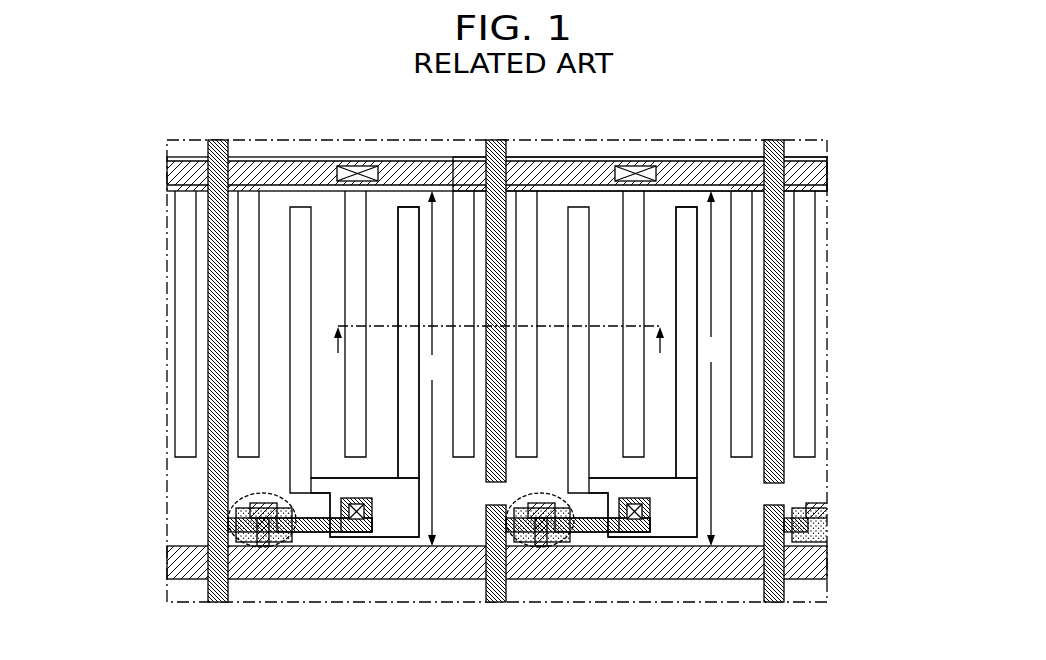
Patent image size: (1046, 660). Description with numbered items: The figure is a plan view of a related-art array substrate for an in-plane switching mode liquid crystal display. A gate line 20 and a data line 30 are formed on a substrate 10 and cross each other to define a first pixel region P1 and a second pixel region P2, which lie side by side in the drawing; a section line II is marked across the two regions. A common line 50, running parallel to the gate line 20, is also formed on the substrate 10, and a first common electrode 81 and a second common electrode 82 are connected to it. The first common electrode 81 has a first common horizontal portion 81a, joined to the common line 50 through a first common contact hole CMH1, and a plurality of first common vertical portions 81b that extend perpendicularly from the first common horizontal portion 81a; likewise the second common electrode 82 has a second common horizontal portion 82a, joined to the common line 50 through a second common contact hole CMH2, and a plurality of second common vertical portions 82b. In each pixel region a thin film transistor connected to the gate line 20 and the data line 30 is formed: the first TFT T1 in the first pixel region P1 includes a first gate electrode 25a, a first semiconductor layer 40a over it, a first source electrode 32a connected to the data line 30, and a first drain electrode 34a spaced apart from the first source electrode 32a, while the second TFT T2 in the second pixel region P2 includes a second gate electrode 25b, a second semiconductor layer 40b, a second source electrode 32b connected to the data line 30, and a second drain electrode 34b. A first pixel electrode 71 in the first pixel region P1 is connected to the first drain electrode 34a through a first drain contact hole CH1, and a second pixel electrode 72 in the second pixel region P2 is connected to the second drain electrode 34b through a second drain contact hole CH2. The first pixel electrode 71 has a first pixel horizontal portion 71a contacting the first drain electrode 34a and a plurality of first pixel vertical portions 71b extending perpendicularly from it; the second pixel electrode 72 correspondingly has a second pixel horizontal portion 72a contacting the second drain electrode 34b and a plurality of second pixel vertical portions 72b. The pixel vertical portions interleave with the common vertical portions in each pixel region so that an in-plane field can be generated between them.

The substrate 10 is at (828, 602).
The gate line 20 is at (385, 572).
The data line 30 is at (208, 380).
The common line 50 is at (507, 162).
The first gate electrode 25a is at (263, 506).
The second gate electrode 25b is at (541, 506).
The first source electrode 32a is at (238, 516).
The second source electrode 32b is at (516, 516).
The first drain electrode 34a is at (291, 521).
The second drain electrode 34b is at (569, 521).
The semiconductor layer 40a is at (278, 543).
The semiconductor layer 40b is at (556, 543).
The first thin film transistor T1 is at (251, 543).
The second thin film transistor T2 is at (529, 543).
The first drain contact hole CH1 is at (357, 506).
The second drain contact hole CH2 is at (635, 506).
The first common contact hole CMH1 is at (360, 164).
The second common contact hole CMH2 is at (641, 164).
The first pixel electrode 71 is at (475, 480).
The first pixel horizontal portion 71a is at (405, 522).
The first pixel vertical portions 71b is at (412, 428).
The second pixel electrode 72 is at (753, 480).
The second pixel horizontal portion 72a is at (683, 522).
The second pixel vertical portions 72b is at (690, 428).
The first common electrode 81 is at (72, 224).
The first common horizontal portion 81a is at (237, 168).
The first common vertical portions 81b is at (252, 268).
The second common electrode 82 is at (928, 228).
The second common horizontal portion 82a is at (795, 193).
The second common vertical portions 82b is at (745, 268).
The first pixel region P1 is at (435, 368).
The second pixel region P2 is at (713, 368).
The section line II is at (493, 353).